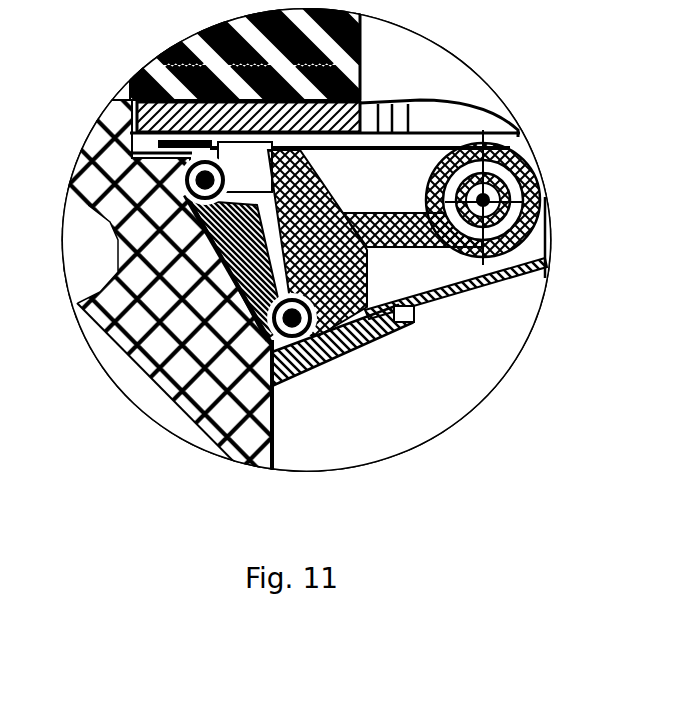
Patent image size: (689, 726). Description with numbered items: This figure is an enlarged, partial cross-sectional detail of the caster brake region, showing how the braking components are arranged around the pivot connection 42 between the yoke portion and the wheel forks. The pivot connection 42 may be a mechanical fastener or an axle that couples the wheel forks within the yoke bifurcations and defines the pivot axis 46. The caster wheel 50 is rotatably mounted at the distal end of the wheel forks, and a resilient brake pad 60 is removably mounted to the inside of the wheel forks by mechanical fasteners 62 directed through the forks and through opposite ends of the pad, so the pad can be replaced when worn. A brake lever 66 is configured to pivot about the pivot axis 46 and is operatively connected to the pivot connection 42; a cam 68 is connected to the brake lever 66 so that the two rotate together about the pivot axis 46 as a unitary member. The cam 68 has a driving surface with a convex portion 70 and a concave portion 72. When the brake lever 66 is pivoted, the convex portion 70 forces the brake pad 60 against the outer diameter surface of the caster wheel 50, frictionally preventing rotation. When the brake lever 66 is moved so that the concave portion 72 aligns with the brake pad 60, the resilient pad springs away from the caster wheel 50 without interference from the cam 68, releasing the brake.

The pivot connection 42 is at (525, 158).
The pivot axis 46 is at (546, 222).
The caster wheel 50 is at (275, 423).
The brake pad 60 is at (532, 60).
The mechanical fasteners 62 is at (197, 160).
The brake lever 66 is at (393, 345).
The cam 68 is at (407, 243).
The convex portion 70 is at (435, 192).
The concave portion 72 is at (400, 318).